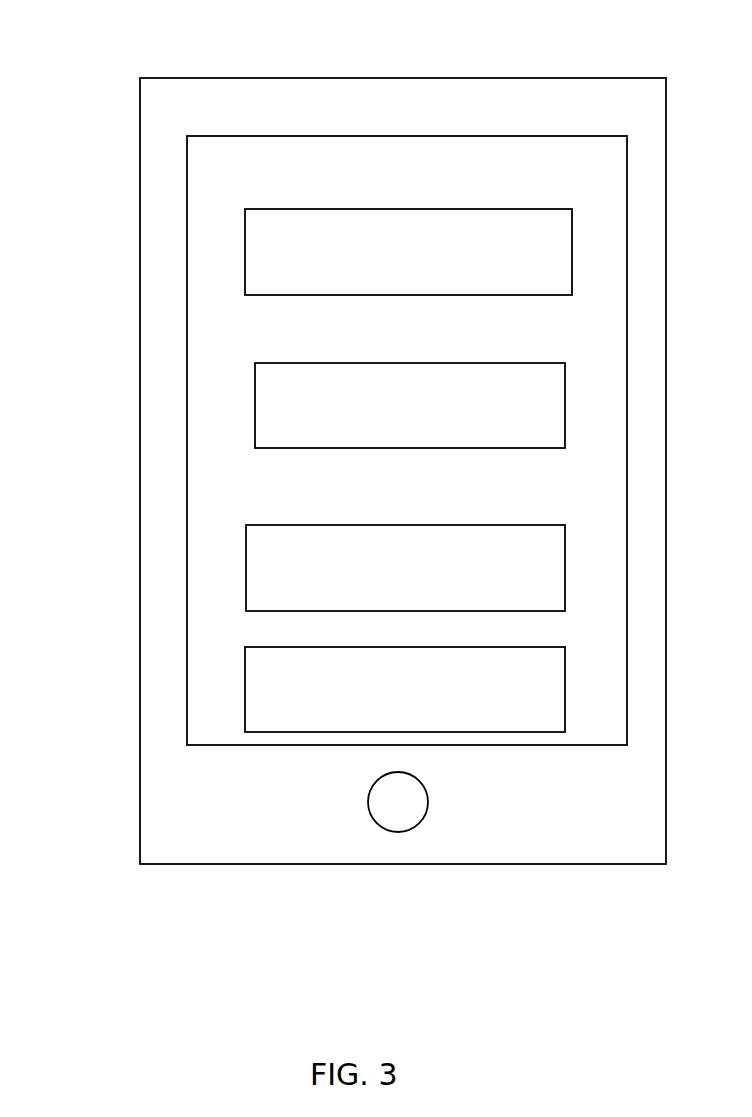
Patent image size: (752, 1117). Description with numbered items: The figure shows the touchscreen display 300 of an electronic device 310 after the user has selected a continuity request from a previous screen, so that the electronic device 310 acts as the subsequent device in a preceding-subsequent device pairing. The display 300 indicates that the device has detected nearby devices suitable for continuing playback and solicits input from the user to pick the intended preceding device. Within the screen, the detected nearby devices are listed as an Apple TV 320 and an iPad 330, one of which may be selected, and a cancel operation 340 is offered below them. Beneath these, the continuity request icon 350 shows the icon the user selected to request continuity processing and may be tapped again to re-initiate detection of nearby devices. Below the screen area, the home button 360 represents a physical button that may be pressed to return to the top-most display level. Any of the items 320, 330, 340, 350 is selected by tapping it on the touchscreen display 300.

The touchscreen display 300 is at (277, 136).
The electronic device 310 is at (140, 117).
The Apple TV 320 is at (245, 248).
The iPad 330 is at (258, 409).
The cancel operation 340 is at (246, 570).
The continuity request icon 350 is at (245, 690).
The home button 360 is at (367, 803).